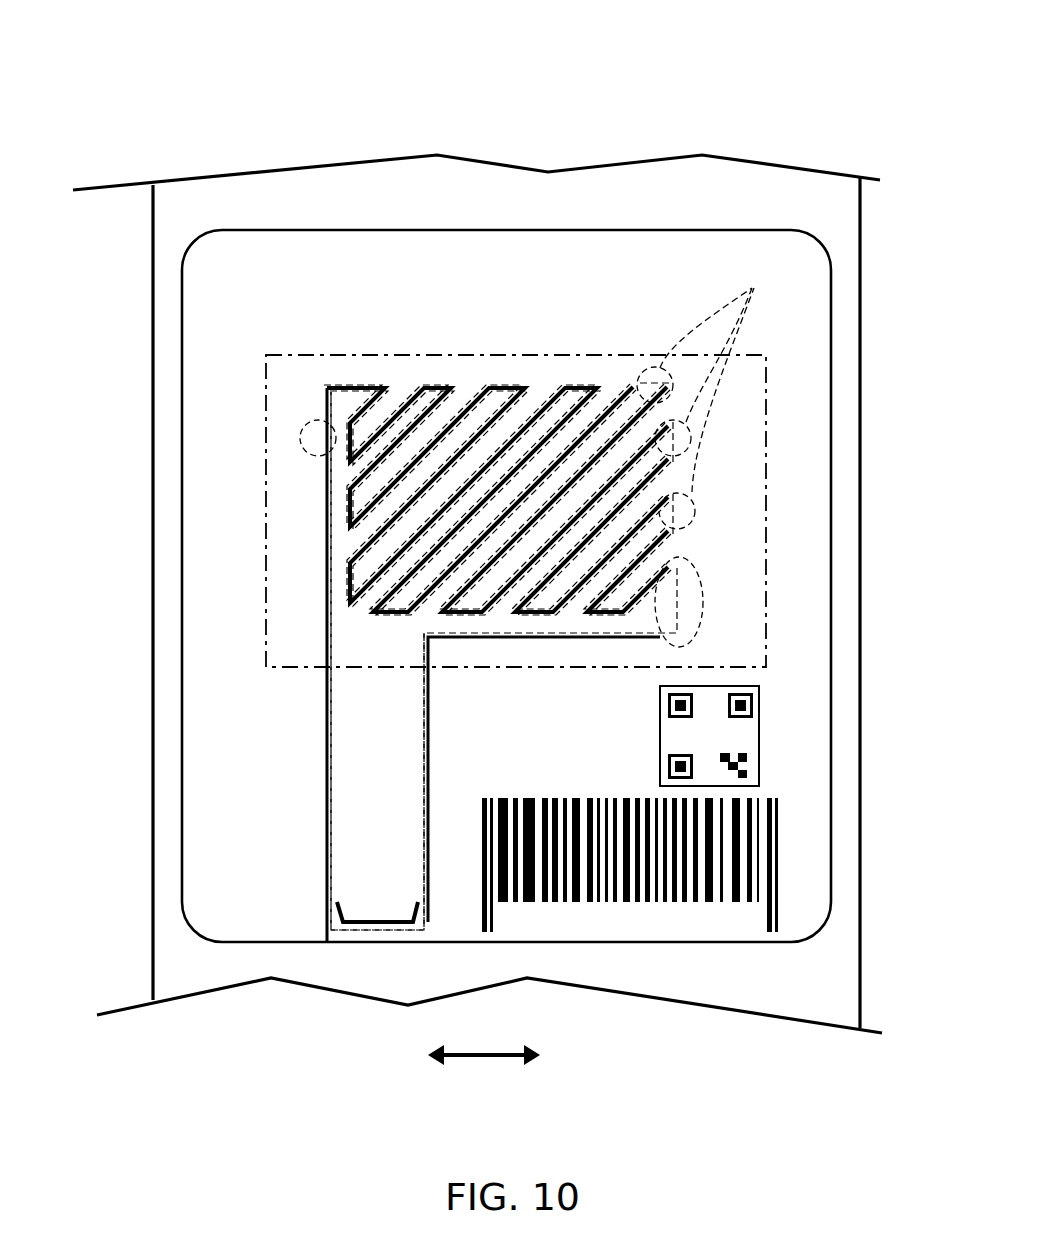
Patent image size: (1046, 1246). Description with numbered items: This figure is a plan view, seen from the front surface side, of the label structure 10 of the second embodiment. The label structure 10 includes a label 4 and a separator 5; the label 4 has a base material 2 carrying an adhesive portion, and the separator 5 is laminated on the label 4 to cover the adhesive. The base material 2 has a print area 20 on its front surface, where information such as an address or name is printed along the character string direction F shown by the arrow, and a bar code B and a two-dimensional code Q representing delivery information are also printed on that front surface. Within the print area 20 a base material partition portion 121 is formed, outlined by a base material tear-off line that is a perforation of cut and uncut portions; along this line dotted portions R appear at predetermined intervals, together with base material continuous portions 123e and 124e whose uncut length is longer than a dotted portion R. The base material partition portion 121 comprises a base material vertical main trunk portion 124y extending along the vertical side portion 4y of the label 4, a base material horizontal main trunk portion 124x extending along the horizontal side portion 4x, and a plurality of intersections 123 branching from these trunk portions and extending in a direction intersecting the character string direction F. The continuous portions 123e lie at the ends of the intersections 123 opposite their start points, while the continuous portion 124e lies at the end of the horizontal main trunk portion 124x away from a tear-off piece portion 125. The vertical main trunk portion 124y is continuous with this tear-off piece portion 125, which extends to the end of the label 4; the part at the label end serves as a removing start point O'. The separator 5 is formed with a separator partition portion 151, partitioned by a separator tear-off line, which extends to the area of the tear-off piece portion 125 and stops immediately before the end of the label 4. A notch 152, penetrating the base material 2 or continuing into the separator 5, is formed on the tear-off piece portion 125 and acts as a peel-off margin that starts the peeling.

The label structure 10 is at (540, 103).
The label 4 is at (752, 215).
The vertical side portion 4y is at (182, 331).
The horizontal side portion 4x is at (593, 945).
The separator 5 is at (843, 243).
The base material 2 is at (820, 343).
The print area 20 is at (305, 352).
The base material partition portion 121 is at (505, 383).
The separator partition portion 151 is at (337, 392).
The intersections 123 is at (640, 340).
The base material continuous portion 123e is at (709, 394).
The base material continuous portion 124e is at (700, 600).
The base material vertical main trunk portion 124y is at (333, 533).
The base material horizontal main trunk portion 124x is at (507, 677).
The tear-off piece portion 125 is at (332, 748).
The notch 152 is at (338, 908).
The dotted portion R is at (302, 432).
The bar code B is at (753, 942).
The two-dimensional code Q is at (785, 747).
The removing start point O' is at (334, 1016).
The character string direction F is at (484, 1071).